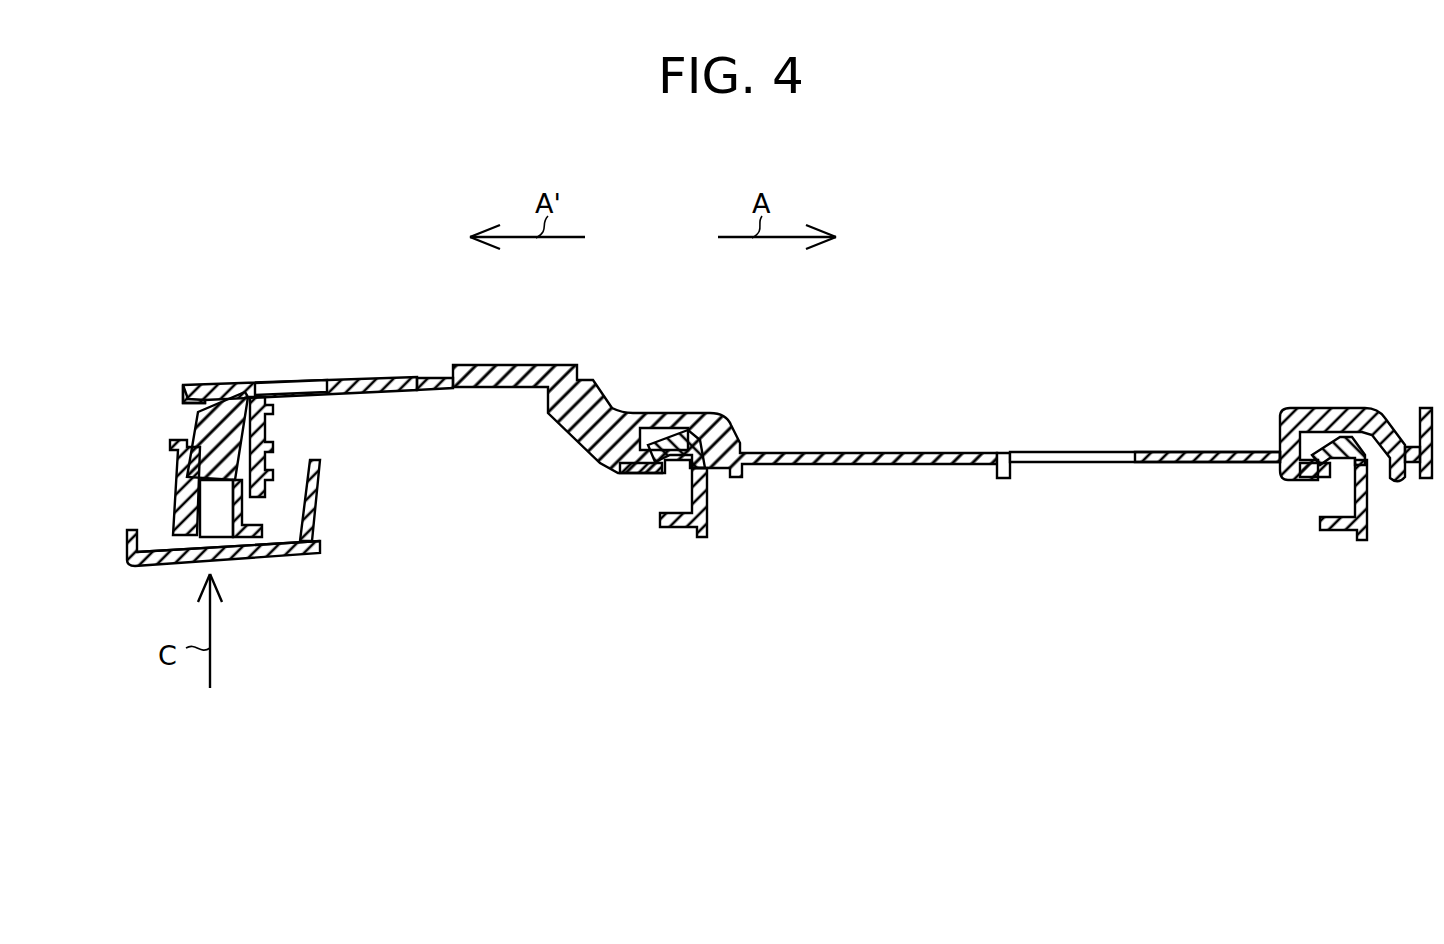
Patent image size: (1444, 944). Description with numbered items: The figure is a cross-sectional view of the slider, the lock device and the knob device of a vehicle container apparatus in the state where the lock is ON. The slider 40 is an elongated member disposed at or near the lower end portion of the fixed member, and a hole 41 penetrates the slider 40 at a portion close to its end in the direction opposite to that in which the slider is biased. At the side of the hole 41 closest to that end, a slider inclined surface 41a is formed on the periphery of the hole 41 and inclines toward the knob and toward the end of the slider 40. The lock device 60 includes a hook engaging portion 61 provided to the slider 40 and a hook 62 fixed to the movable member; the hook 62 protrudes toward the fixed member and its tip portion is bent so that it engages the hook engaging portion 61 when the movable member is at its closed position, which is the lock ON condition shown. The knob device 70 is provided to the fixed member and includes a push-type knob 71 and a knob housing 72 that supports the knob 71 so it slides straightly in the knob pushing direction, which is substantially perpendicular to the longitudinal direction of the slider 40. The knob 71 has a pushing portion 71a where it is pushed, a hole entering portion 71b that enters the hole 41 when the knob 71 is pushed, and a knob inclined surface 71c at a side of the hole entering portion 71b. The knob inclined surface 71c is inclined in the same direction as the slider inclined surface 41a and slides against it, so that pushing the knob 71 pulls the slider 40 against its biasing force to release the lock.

The slider 40 is at (492, 365).
The hole 41 is at (322, 378).
The slider inclined surface 41a is at (262, 383).
The lock device 60 is at (715, 523).
The hook engaging portion 61 is at (647, 470).
The hook 62 is at (678, 437).
The knob device 70 is at (290, 553).
The knob 71 is at (313, 500).
The pushing portion 71a is at (247, 565).
The hole entering portion 71b is at (268, 412).
The knob inclined surface 71c is at (188, 402).
The knob housing 72 is at (180, 466).